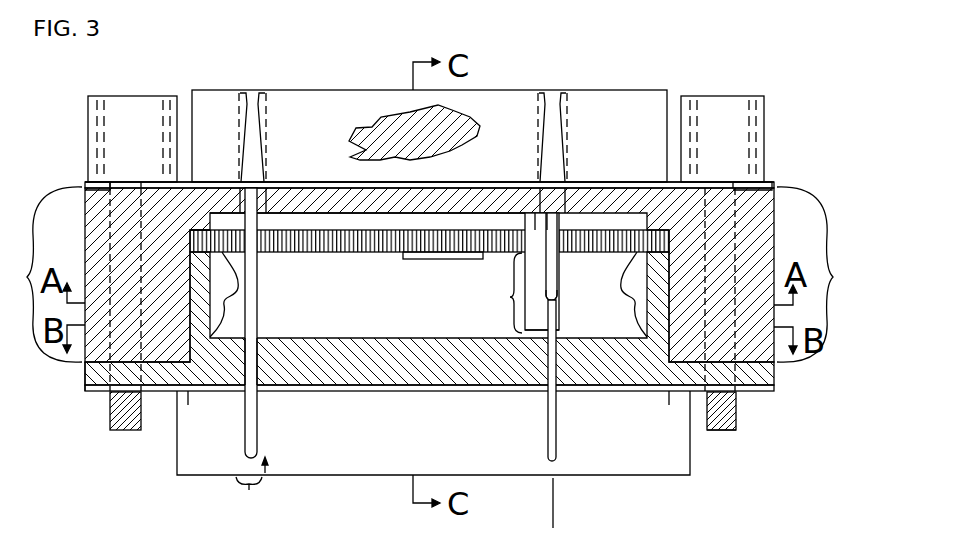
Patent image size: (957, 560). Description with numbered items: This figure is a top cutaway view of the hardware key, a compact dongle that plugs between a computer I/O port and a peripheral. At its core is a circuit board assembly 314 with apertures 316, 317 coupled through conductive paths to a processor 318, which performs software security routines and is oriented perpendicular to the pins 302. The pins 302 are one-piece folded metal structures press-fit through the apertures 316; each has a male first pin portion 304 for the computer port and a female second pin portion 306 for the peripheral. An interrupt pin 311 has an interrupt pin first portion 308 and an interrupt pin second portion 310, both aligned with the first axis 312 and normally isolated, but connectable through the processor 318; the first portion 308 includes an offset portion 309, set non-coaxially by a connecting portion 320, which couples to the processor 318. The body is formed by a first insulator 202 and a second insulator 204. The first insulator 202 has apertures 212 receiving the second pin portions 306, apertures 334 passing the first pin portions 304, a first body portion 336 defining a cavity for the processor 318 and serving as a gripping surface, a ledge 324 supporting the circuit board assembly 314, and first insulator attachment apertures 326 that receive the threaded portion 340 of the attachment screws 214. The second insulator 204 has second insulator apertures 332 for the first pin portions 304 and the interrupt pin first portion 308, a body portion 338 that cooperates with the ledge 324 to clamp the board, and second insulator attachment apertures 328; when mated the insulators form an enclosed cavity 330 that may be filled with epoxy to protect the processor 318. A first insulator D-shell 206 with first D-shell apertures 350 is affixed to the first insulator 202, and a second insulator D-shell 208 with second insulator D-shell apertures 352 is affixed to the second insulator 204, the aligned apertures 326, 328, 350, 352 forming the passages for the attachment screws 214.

The first insulator 202 is at (398, 120).
The second insulator 204 is at (85, 378).
The first insulator D-shell 206 is at (607, 105).
The second insulator D-shell 208 is at (480, 462).
The apertures 212 is at (264, 122).
The attachment screws 214 is at (88, 125).
The pins 302 is at (252, 486).
The first pin portion 304 is at (258, 329).
The second pin portion 306 is at (244, 110).
The interrupt pin first portion 308 is at (525, 222).
The offset portion 309 is at (510, 297).
The interrupt pin second portion 310 is at (563, 165).
The interrupt pin 311 is at (556, 300).
The first axis 312 is at (553, 520).
The circuit board assembly 314 is at (343, 252).
The apertures 316 is at (260, 252).
The apertures 317 is at (525, 229).
The processor 318 is at (425, 259).
The connecting portion 320 is at (540, 330).
The ledge 324 is at (127, 190).
The first insulator attachment apertures 326 is at (108, 280).
The second insulator attachment apertures 328 is at (110, 377).
The enclosed cavity 330 is at (400, 340).
The second insulator apertures 332 is at (245, 360).
The apertures 334 is at (258, 205).
The first body portion 336 is at (431, 274).
The body portion 338 is at (237, 282).
The threaded portion 340 is at (737, 420).
The first D-shell apertures 350 is at (100, 185).
The second insulator D-shell apertures 352 is at (142, 390).